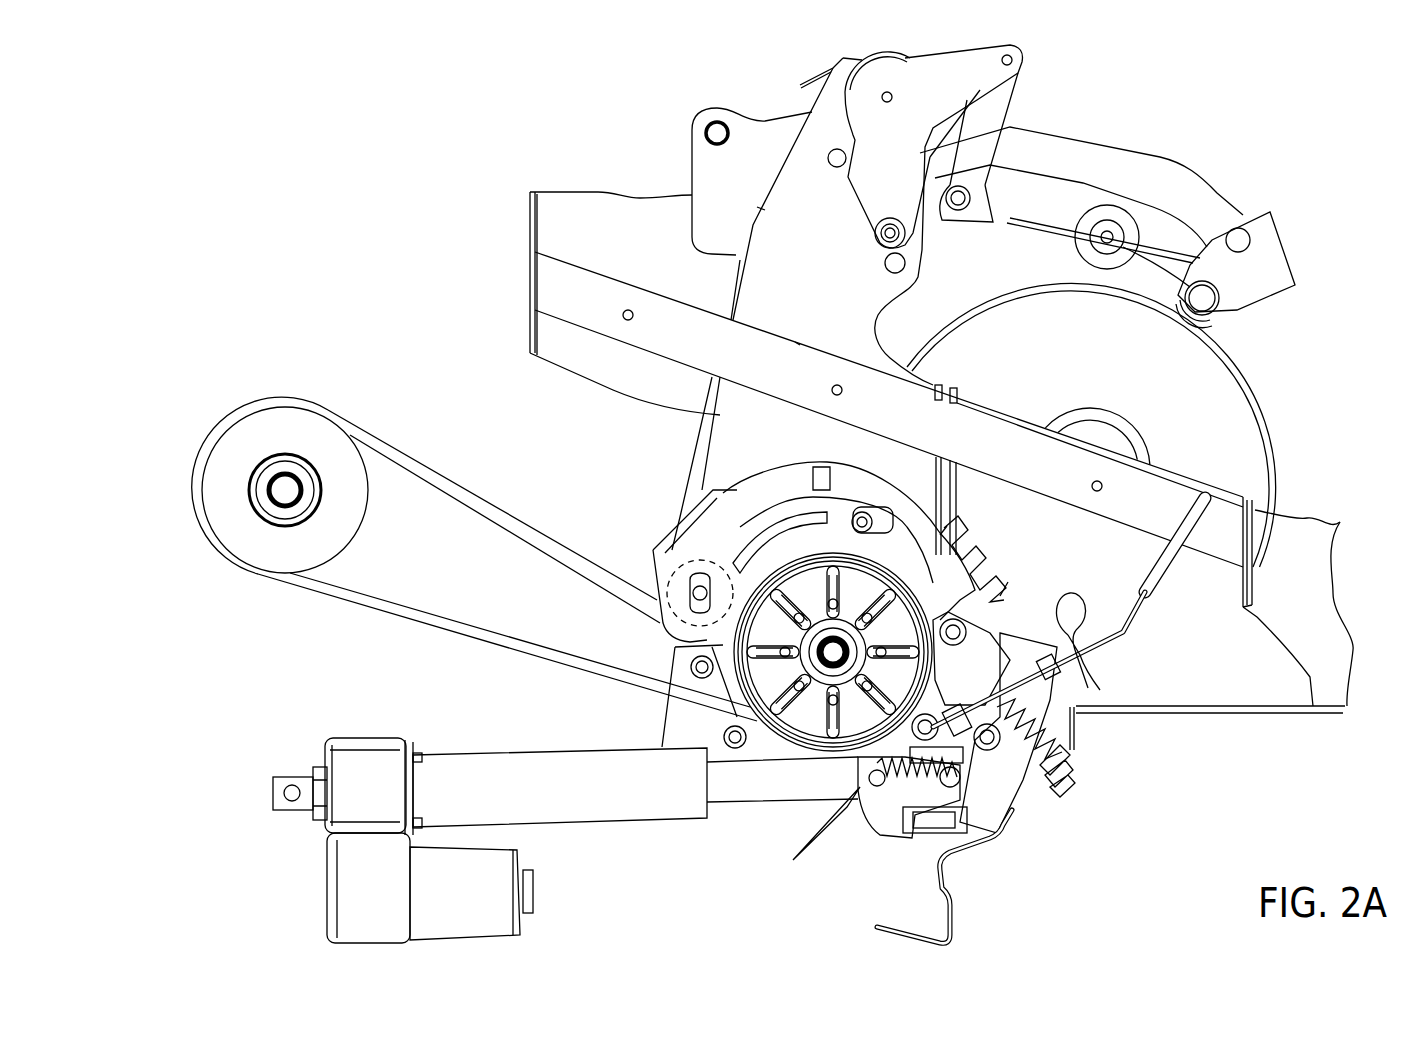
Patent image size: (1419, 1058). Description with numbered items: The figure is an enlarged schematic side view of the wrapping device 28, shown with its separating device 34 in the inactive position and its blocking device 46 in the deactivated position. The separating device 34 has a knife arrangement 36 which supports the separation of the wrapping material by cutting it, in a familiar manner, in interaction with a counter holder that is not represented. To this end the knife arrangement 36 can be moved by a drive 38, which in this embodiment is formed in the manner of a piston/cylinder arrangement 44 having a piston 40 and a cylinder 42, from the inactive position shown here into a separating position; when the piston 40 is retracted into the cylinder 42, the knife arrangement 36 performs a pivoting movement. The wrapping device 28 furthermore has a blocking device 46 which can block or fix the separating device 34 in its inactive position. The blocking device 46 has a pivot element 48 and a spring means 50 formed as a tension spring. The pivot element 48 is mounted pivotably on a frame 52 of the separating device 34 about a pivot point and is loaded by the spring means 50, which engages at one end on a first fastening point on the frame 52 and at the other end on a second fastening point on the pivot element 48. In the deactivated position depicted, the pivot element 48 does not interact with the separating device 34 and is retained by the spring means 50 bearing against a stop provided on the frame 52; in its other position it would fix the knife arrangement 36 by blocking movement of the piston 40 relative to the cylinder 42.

The wrapping device 28 is at (395, 177).
The separating device 34 is at (846, 855).
The knife arrangement 36 is at (846, 803).
The drive 38 is at (258, 722).
The piston 40 is at (765, 782).
The cylinder 42 is at (516, 790).
The piston/cylinder arrangement 44 is at (583, 843).
The blocking device 46 is at (1025, 828).
The pivot element 48 is at (960, 892).
The spring means 50 is at (918, 805).
The frame 52 is at (890, 803).